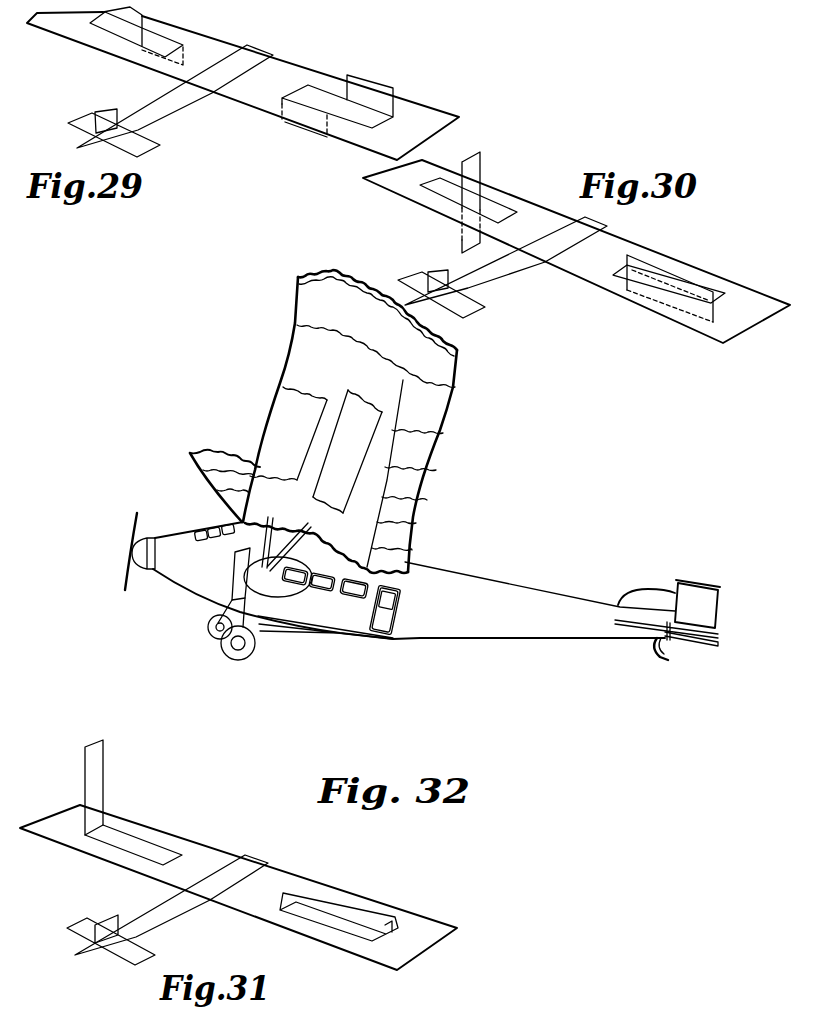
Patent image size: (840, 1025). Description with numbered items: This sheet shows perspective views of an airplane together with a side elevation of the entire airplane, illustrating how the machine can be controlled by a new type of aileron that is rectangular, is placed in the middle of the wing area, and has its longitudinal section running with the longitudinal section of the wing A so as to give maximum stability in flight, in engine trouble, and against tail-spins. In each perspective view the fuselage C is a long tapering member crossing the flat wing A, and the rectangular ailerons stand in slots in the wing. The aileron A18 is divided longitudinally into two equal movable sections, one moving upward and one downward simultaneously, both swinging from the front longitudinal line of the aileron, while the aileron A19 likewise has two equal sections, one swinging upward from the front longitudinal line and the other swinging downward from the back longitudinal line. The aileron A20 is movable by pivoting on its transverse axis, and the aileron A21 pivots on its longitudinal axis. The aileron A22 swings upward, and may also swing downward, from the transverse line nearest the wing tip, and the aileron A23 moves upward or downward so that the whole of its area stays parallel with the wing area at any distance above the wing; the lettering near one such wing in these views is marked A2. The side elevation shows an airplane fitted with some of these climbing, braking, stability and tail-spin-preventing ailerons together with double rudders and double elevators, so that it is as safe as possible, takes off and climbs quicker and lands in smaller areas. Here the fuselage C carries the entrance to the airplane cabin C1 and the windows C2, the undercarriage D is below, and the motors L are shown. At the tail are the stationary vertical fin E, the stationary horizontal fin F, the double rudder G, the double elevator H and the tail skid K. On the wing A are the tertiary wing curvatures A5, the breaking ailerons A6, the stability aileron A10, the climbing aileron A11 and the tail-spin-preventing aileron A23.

In FIG. 29, the wing A is at (199, 49).
In FIG. 30, the wing A is at (533, 224).
In FIG. 32, the wing A is at (300, 369).
In FIG. 31, the wing A is at (195, 858).
In FIG. 32, the tertiary wing curvatures A5 is at (336, 282).
In FIG. 32, the breaking ailerons A6 is at (443, 441).
In FIG. 32, the stability aileron A10 is at (390, 340).
In FIG. 32, the climbing aileron A11 is at (280, 440).
In FIG. 29, the rectangular aileron A18 is at (145, 43).
In FIG. 29, the rectangular aileron A19 is at (380, 92).
In FIG. 30, the rectangular aileron A20 is at (475, 177).
In FIG. 30, the rectangular aileron A21 is at (708, 303).
In FIG. 31, the rectangular aileron A22 is at (97, 755).
In FIG. 32, the rectangular aileron A23 is at (352, 485).
In FIG. 31, the rectangular aileron A23 is at (362, 914).
In FIG. 29, the wing A2 is at (301, 86).
In FIG. 29, the fuselage C is at (252, 48).
In FIG. 30, the fuselage C is at (598, 233).
In FIG. 32, the fuselage C is at (203, 580).
In FIG. 31, the fuselage C is at (252, 863).
In FIG. 32, the entrance to the airplane cabin C1 is at (383, 603).
In FIG. 32, the windows C2 is at (199, 536).
In FIG. 32, the undercarriage D is at (244, 646).
In FIG. 32, the stationary vertical fin E is at (647, 593).
In FIG. 32, the stationary horizontal fin F is at (620, 621).
In FIG. 32, the double rudder G is at (714, 590).
In FIG. 32, the double elevator H is at (710, 643).
In FIG. 32, the tail skid K is at (661, 657).
In FIG. 32, the motors L is at (133, 550).